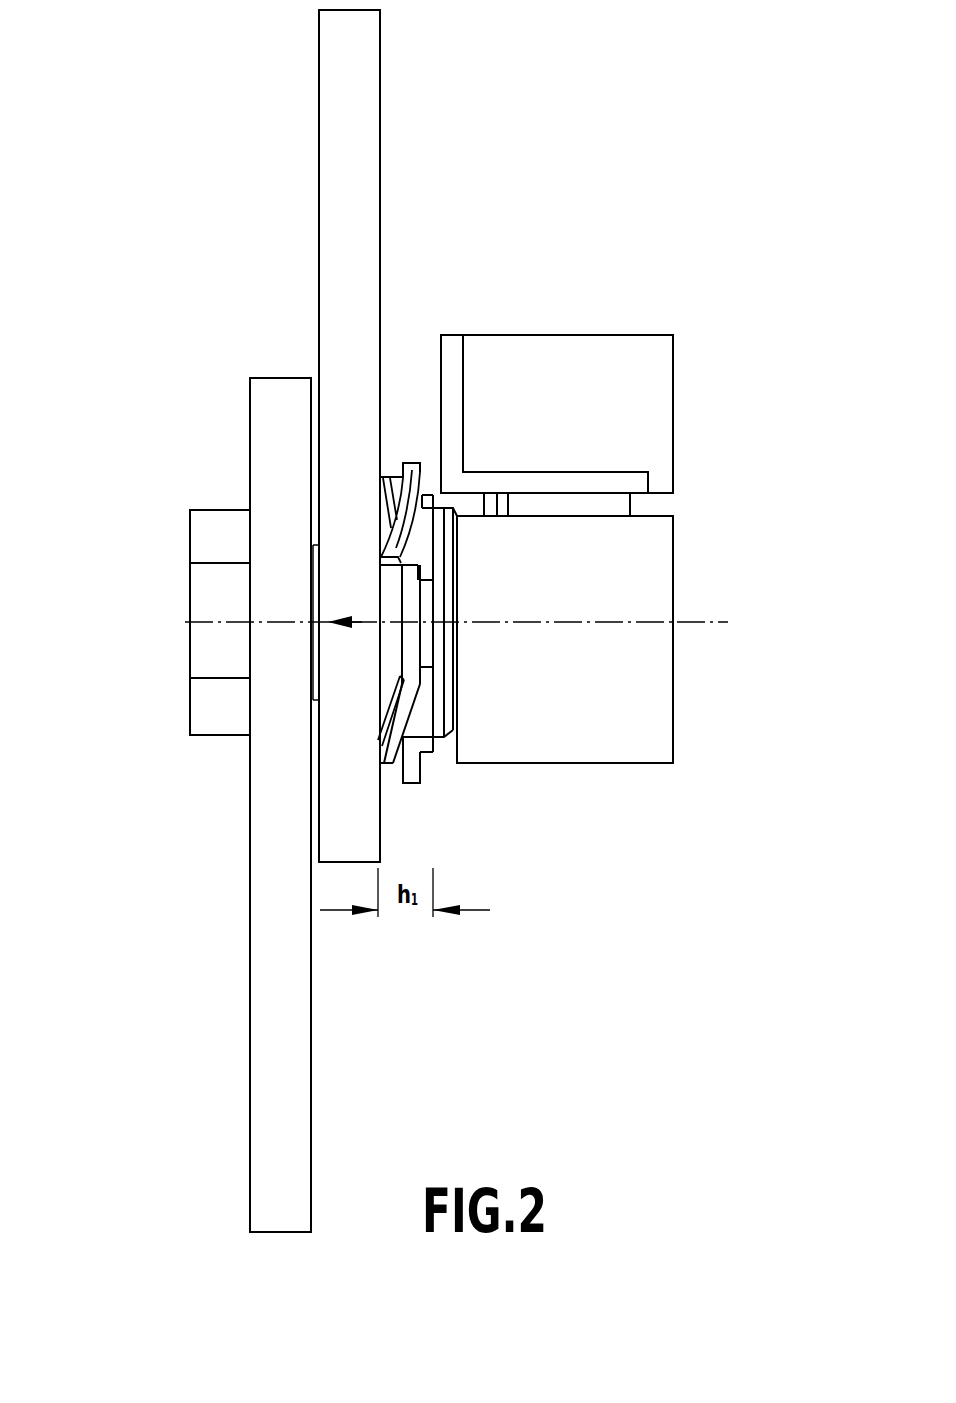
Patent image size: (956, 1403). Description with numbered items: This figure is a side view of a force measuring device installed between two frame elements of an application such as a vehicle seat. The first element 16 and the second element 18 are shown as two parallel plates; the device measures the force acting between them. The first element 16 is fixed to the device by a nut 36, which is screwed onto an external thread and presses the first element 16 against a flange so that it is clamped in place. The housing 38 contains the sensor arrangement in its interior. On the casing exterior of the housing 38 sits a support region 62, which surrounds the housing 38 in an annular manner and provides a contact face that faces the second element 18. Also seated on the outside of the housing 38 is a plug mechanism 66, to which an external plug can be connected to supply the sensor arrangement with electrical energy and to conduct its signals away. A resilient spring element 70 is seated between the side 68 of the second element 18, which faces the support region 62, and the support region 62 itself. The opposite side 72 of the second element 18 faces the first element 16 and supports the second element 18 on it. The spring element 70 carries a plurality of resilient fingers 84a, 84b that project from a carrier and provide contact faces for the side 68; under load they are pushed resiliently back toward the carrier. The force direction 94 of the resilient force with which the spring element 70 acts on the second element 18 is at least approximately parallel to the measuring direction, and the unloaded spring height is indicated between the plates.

The first element 16 is at (287, 1142).
The second element 18 is at (367, 147).
The nut 36 is at (213, 722).
The housing 38 is at (574, 728).
The support region 62 is at (442, 710).
The plug mechanism 66 is at (537, 365).
The side of the second element 68 is at (378, 823).
The spring element 70 is at (418, 533).
The side of the second element 72 is at (313, 821).
The finger 84a is at (393, 745).
The finger 84b is at (388, 545).
The force direction 94 is at (358, 625).